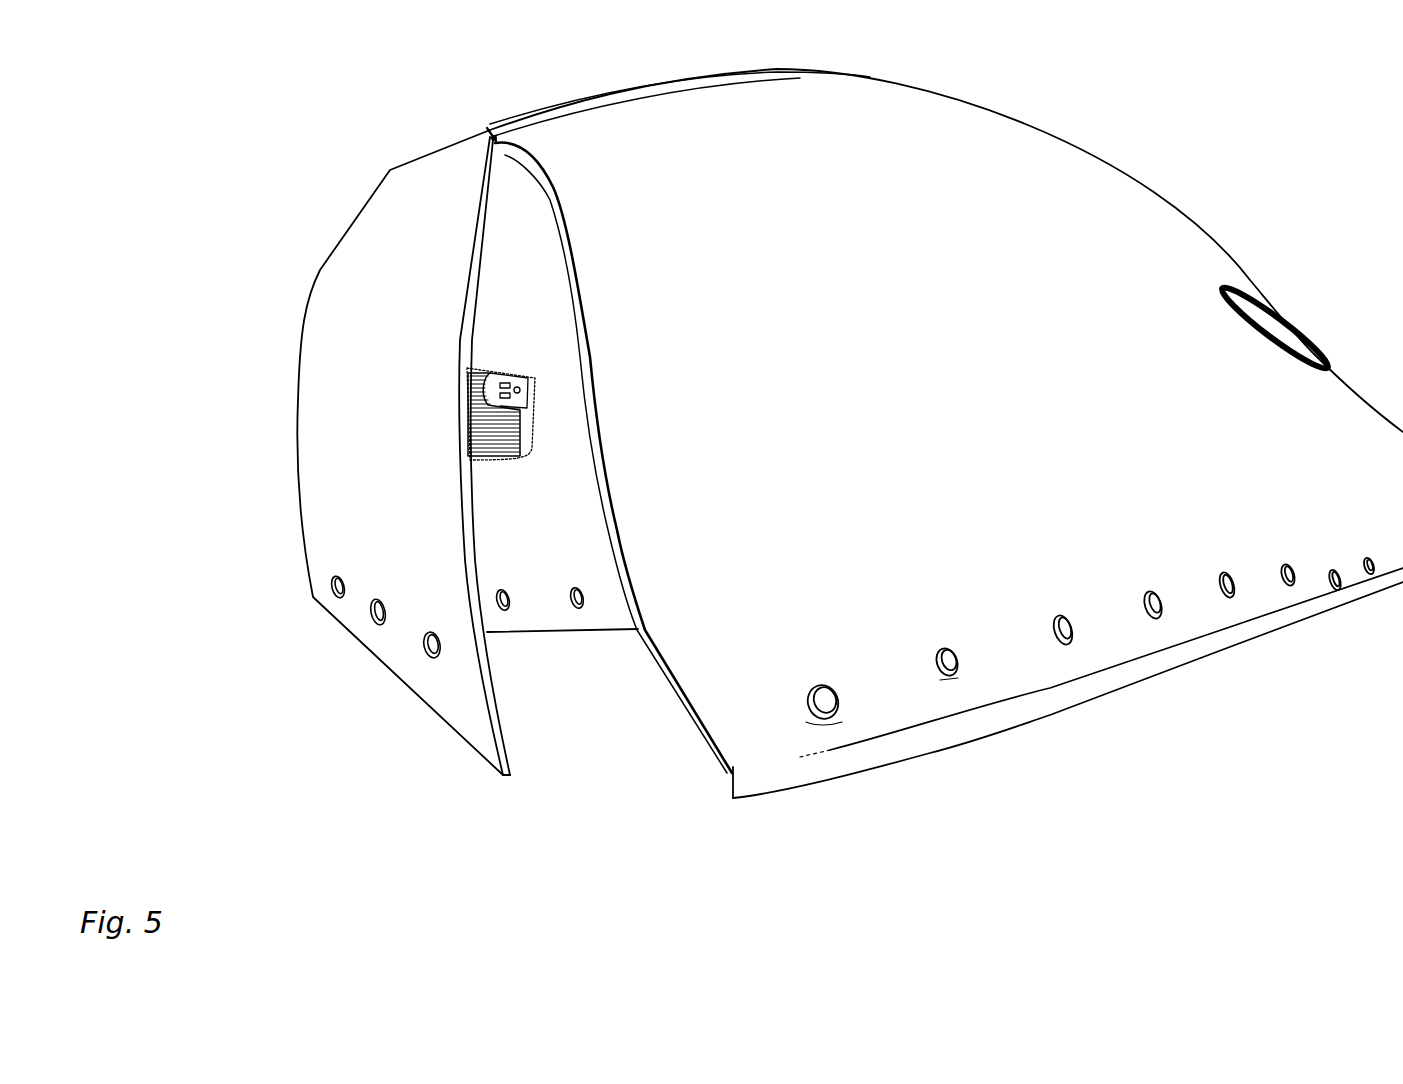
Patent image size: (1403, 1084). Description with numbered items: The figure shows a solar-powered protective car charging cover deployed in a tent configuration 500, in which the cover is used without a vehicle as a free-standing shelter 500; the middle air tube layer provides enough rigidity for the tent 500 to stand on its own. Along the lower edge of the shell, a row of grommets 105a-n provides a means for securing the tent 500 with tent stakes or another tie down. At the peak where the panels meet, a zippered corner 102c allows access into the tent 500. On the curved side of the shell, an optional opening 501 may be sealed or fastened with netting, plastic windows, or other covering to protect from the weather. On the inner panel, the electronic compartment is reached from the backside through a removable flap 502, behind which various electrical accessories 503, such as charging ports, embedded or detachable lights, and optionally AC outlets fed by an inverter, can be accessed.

The tent configuration 500 is at (307, 709).
The zippered corner 102c is at (491, 137).
The optional opening 501 is at (1305, 370).
The removable flap 502 is at (480, 450).
The electrical accessories 503 is at (520, 405).
The grommets 105a-n is at (947, 657).